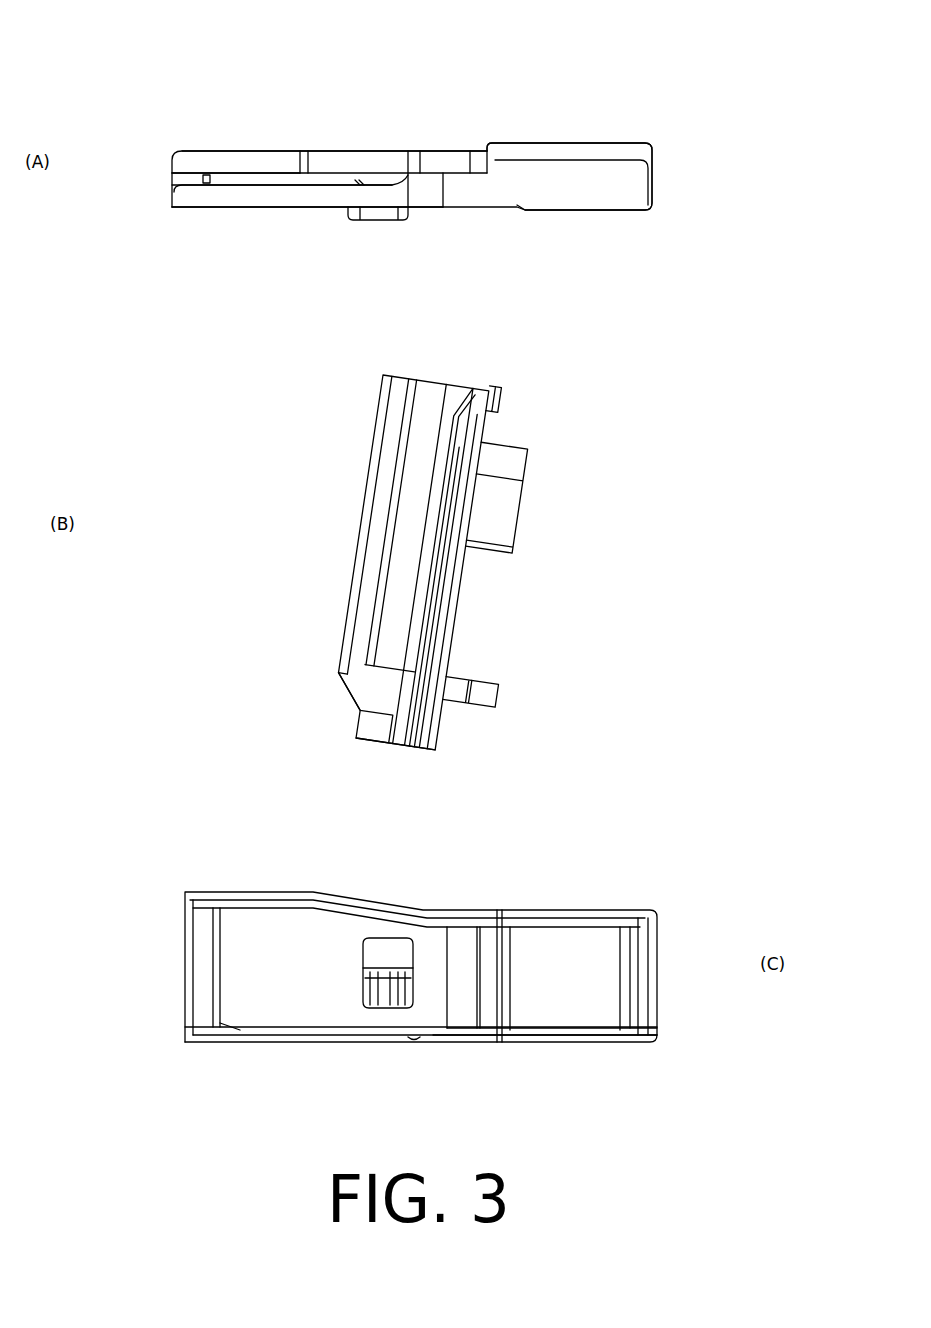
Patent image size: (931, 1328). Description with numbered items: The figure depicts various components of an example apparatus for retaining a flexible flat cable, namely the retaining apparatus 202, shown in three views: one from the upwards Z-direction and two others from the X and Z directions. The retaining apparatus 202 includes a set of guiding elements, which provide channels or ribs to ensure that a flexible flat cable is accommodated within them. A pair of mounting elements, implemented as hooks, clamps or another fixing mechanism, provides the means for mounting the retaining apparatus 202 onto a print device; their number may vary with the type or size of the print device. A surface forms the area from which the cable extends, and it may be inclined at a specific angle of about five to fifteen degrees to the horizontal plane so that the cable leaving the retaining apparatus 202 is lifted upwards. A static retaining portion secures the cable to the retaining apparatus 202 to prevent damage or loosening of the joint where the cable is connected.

The retaining apparatus 202 is at (489, 48).